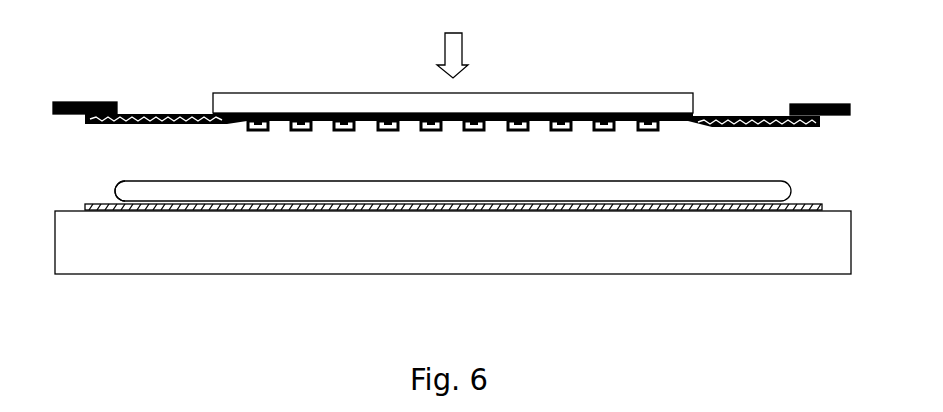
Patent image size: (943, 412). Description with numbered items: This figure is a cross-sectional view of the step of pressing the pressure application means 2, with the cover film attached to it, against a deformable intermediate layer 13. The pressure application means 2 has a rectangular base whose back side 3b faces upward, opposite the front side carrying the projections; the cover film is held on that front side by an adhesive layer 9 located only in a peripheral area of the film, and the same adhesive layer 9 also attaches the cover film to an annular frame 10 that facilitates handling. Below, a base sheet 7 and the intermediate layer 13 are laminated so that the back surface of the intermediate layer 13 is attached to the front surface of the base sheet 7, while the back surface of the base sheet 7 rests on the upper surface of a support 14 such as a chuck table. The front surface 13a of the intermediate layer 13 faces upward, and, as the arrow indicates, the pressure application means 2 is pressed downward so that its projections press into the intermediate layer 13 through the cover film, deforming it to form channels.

The pressure application means 2 is at (668, 93).
The back side 3b is at (266, 93).
The base sheet 7 is at (85, 202).
The adhesive layer 9 is at (753, 115).
The frame 10 is at (88, 97).
The intermediate layer 13 is at (773, 197).
The front surface 13a is at (125, 181).
The support 14 is at (792, 253).